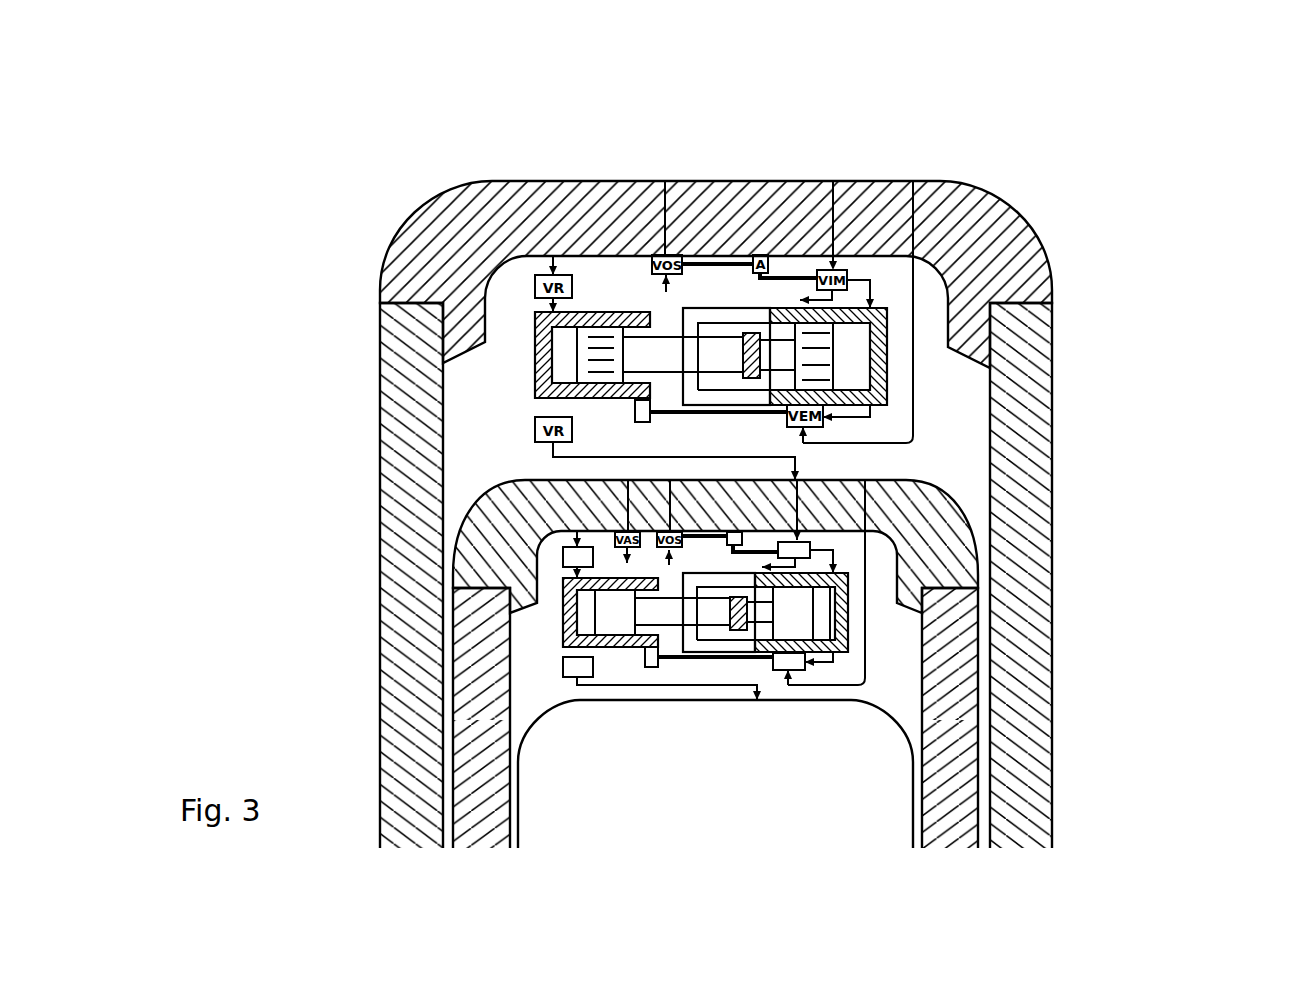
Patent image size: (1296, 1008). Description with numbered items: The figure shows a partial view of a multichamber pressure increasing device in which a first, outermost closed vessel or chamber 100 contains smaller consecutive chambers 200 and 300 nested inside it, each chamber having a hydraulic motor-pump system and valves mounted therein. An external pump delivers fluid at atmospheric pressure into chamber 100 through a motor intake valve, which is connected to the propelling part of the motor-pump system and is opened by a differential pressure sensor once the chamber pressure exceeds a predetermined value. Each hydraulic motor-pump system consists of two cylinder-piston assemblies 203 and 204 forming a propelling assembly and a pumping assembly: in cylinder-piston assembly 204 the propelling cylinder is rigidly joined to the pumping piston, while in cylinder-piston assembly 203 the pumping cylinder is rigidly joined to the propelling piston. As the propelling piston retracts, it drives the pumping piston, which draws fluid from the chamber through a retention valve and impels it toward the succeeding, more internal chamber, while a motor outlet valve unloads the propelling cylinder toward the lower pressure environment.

The first, outermost closed vessel or chamber 100 is at (1053, 362).
The chamber 200 is at (947, 523).
The chamber 300 is at (865, 790).
The cylinder-piston assembly 203 is at (767, 317).
The cylinder-piston assembly 204 is at (828, 360).